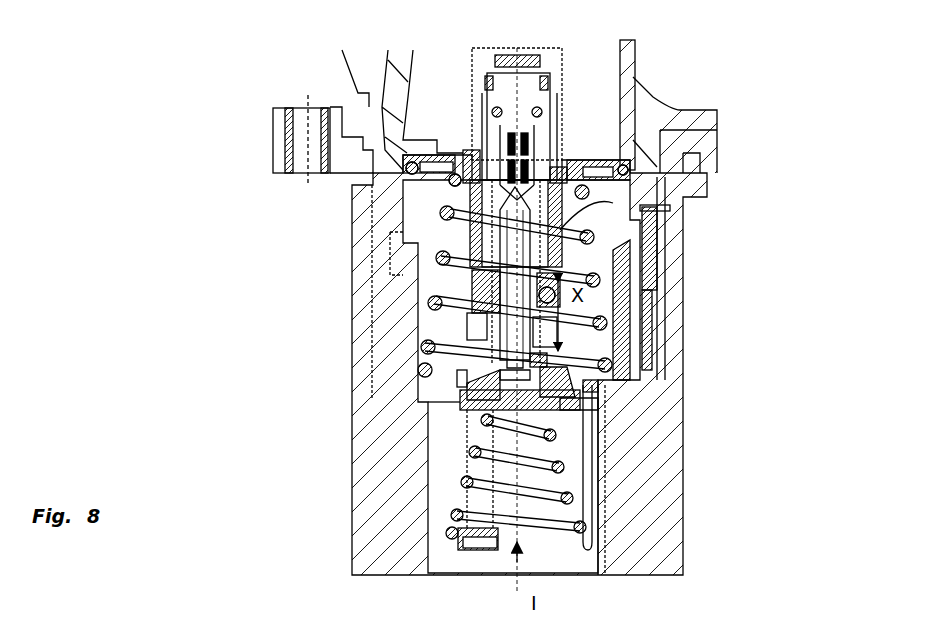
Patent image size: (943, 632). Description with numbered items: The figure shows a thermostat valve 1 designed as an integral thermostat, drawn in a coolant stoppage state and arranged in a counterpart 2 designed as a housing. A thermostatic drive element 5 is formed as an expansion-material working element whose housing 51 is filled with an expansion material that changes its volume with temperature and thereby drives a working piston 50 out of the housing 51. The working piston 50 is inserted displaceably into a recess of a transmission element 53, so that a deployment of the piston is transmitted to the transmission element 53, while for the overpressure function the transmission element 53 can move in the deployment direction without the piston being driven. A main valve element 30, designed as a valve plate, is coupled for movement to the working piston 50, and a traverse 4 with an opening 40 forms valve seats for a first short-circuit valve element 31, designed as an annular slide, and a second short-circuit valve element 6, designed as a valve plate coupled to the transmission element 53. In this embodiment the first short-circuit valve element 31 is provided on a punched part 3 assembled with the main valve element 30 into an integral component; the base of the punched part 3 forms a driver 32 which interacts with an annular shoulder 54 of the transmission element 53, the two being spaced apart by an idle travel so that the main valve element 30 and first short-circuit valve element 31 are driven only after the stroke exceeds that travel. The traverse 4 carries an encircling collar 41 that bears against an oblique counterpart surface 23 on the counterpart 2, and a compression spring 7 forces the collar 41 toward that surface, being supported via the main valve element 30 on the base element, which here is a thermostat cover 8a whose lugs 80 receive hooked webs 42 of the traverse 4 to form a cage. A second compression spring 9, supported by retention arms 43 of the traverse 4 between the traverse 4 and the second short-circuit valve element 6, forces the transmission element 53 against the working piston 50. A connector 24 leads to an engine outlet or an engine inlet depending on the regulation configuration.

The thermostat valve 1 is at (222, 150).
The counterpart 2 is at (710, 150).
The punched part 3 is at (450, 124).
The traverse 4 is at (600, 387).
The thermostatic drive element 5 is at (584, 44).
The second short-circuit valve element 6 is at (570, 395).
The compression spring 7 is at (500, 292).
The thermostat cover 8a is at (620, 66).
The compression spring 9 is at (560, 523).
The counterpart surface 23 is at (640, 365).
The connector 24 is at (642, 297).
The main valve element 30 is at (593, 160).
The first short-circuit valve element 31 is at (490, 342).
The driver 32 is at (497, 332).
The opening 40 is at (444, 414).
The collar 41 is at (597, 386).
The webs 42 is at (623, 270).
The retention arms 43 is at (465, 457).
The working piston 50 is at (440, 257).
The housing 51 is at (487, 230).
The transmission element 53 is at (500, 370).
The annular shoulder 54 is at (495, 312).
The lugs 80 is at (640, 212).